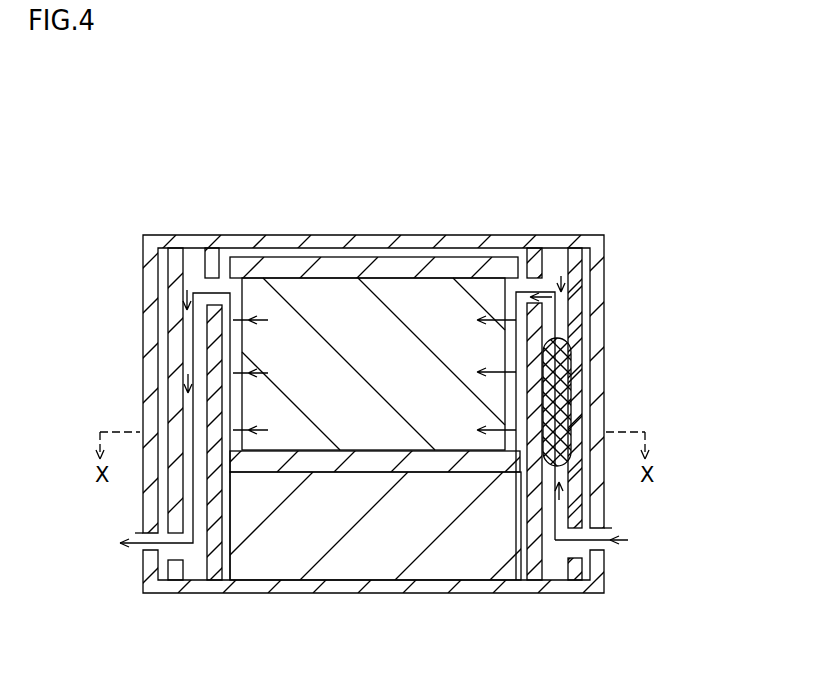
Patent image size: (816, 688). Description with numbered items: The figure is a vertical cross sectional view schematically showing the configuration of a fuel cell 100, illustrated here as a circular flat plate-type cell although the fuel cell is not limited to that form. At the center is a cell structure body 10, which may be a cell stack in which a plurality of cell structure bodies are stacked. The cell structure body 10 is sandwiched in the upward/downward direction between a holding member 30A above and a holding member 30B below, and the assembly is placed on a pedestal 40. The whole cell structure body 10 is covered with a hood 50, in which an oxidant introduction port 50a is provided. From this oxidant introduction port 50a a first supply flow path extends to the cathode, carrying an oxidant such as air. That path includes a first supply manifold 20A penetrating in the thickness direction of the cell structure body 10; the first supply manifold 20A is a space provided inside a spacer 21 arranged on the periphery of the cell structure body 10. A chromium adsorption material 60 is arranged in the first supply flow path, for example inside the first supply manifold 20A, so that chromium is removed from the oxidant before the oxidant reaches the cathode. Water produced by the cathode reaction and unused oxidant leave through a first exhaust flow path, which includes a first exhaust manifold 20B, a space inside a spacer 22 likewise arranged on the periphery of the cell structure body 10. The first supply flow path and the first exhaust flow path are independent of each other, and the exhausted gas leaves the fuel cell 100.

The fuel cell 100 is at (417, 178).
The hood 50 is at (277, 236).
The oxidant introduction port 50a is at (612, 534).
The cell structure body 10 is at (405, 382).
The first supply manifold 20A is at (565, 272).
The first exhaust manifold 20B is at (180, 298).
The spacer 21 is at (530, 513).
The spacer 22 is at (212, 497).
The holding member 30A is at (508, 257).
The holding member 30B is at (376, 462).
The pedestal 40 is at (477, 550).
The chromium adsorption material 60 is at (560, 370).